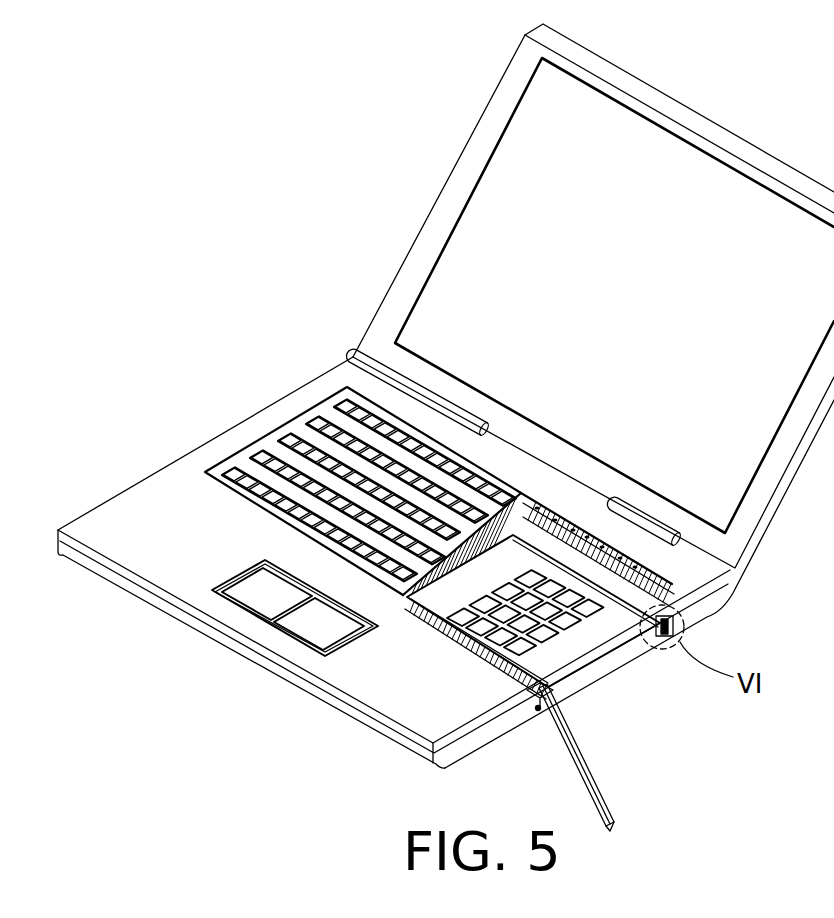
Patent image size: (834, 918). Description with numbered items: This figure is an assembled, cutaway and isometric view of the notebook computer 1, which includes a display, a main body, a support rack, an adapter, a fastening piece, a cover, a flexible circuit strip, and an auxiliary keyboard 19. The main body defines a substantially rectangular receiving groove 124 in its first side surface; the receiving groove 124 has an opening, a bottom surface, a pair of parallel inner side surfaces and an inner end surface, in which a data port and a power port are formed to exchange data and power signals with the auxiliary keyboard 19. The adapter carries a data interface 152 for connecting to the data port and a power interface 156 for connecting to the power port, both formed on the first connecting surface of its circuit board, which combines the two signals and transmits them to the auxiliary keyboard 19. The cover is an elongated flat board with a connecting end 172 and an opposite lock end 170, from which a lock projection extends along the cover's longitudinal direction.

The notebook computer 1 is at (318, 213).
The auxiliary keyboard 19 is at (603, 637).
The receiving groove 124 is at (672, 615).
The data interface 152 is at (433, 603).
The power interface 156 is at (480, 567).
The lock end 170 is at (597, 787).
The connecting end 172 is at (538, 699).